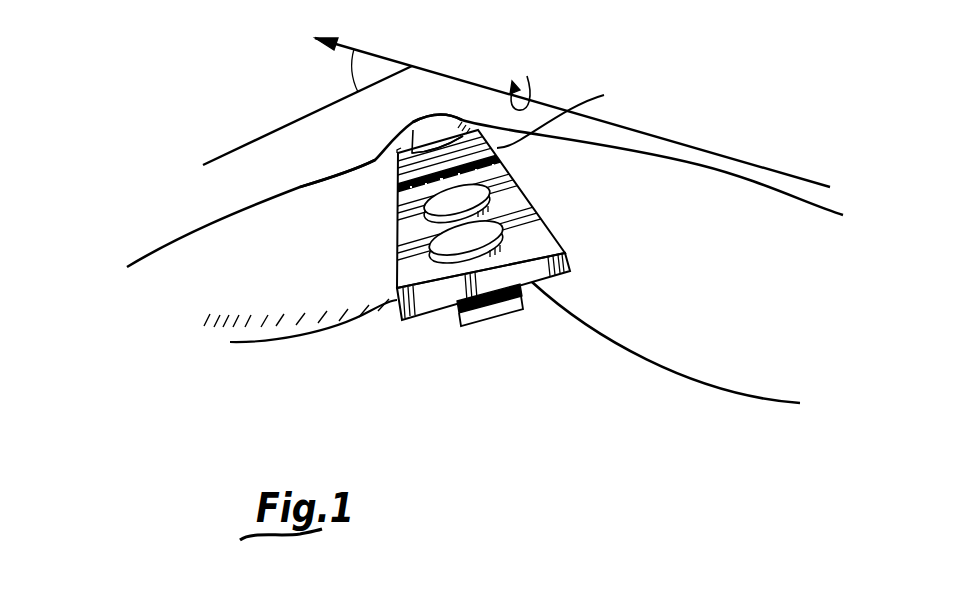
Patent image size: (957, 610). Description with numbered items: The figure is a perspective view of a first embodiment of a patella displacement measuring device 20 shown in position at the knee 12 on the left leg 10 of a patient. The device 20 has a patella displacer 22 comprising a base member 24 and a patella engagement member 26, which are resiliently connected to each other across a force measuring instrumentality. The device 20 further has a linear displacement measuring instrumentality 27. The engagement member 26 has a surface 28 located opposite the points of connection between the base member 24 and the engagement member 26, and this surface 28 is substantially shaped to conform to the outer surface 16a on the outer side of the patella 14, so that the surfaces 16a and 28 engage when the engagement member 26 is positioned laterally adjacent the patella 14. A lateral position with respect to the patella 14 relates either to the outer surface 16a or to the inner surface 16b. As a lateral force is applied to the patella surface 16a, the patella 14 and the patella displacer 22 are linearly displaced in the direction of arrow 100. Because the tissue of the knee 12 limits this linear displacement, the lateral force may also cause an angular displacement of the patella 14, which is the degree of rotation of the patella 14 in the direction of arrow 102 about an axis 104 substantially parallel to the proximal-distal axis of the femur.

The left leg 10 is at (778, 192).
The knee 12 is at (374, 161).
The patella 14 is at (437, 133).
The outer surface of the patella 16a is at (572, 114).
The inner surface of the patella 16b is at (461, 113).
The patella displacement measuring device 20 is at (471, 255).
The patella displacer 22 is at (531, 190).
The base member 24 is at (557, 235).
The patella engagement member 26 is at (397, 182).
The linear displacement measuring instrumentality 27 is at (500, 305).
The surface 28 is at (413, 131).
The arrow 100 is at (453, 128).
The arrow 102 is at (527, 76).
The axis 104 is at (718, 153).